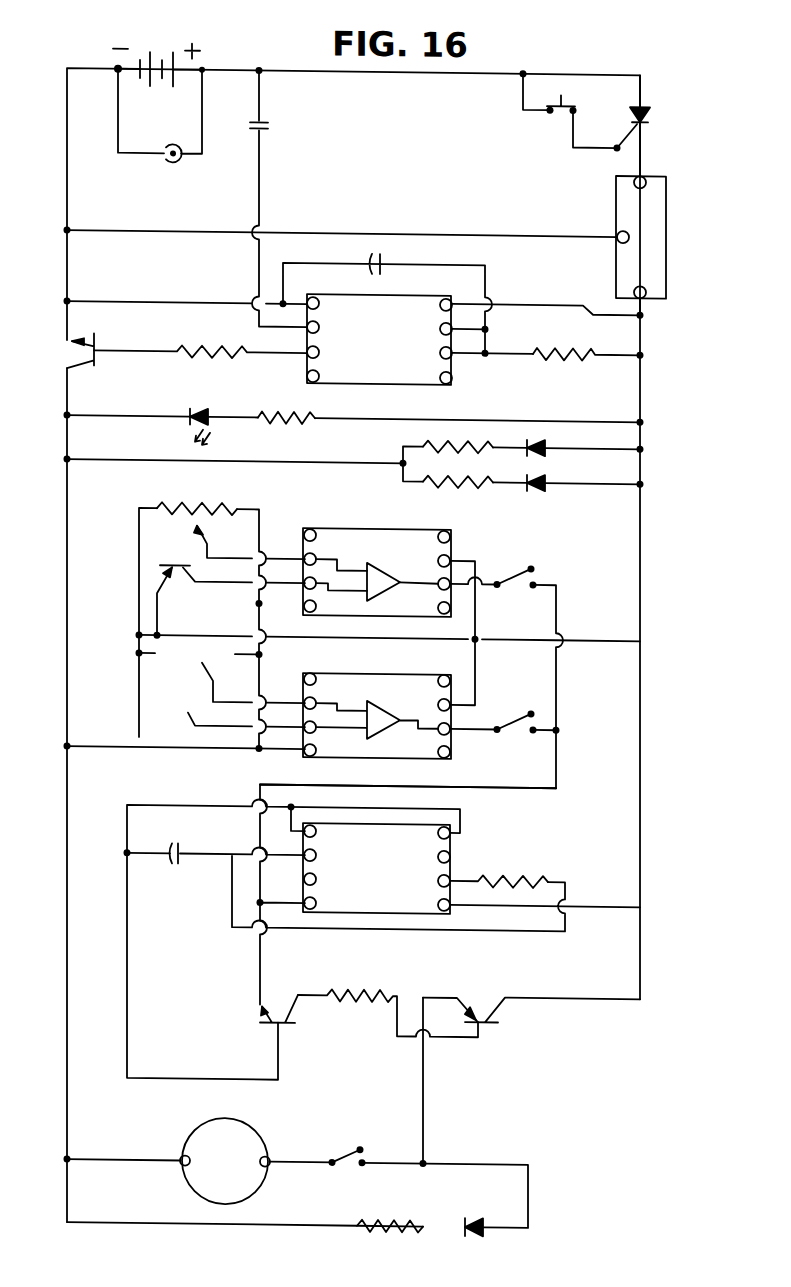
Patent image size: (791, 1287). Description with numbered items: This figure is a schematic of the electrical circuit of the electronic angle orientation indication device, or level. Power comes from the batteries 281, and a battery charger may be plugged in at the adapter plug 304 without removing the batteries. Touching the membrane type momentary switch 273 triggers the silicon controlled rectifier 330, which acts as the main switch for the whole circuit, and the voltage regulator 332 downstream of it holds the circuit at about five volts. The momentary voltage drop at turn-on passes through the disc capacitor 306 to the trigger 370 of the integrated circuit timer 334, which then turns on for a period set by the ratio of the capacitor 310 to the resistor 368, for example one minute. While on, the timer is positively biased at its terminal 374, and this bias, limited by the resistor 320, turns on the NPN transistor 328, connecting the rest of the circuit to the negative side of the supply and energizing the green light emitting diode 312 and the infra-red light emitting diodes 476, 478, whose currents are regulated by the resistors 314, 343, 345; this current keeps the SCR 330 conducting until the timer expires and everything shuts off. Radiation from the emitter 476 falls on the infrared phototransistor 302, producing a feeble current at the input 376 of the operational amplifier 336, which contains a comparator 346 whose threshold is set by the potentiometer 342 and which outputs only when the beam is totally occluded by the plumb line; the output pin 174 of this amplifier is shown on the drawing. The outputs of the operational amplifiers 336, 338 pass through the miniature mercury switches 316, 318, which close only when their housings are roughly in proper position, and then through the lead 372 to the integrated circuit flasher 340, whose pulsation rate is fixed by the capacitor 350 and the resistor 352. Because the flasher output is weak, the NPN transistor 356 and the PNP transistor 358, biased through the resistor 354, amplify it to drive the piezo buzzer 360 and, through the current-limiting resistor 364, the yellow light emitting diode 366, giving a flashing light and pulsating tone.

The batteries 281 is at (173, 44).
The adapter plug for recharger unit 304 is at (168, 167).
The disc capacitor 306 is at (271, 128).
The membrane type momentary switch 273 is at (562, 114).
The silicon controlled rectifier 330 is at (652, 117).
The integrated circuit voltage regulator 332 is at (623, 208).
The capacitor 310 is at (383, 258).
The integrated circuit timer 334 is at (390, 372).
The trigger 370 is at (306, 329).
The terminal 374 is at (306, 354).
The resistor 368 is at (547, 360).
The NPN transistor 328 is at (73, 353).
The resistor 320 is at (238, 347).
The light emitting diode 312 is at (202, 408).
The resistor 314 is at (312, 430).
The resistor 343 is at (430, 443).
The resistor 345 is at (460, 485).
The infra-red light emitting diode 476 is at (552, 438).
The infra-red light emitting diode 478 is at (546, 486).
The potentiometer 342 is at (183, 500).
The infrared phototransistor 302 is at (177, 575).
The integrated circuit operational amplifier 336 is at (388, 534).
The comparator 346 is at (374, 560).
The input 376 is at (315, 588).
The output pin 174 is at (442, 588).
The miniature mercury switch 316 is at (542, 565).
The integrated circuit operational amplifier 338 is at (385, 679).
The miniature mercury switch 318 is at (537, 719).
The lead 372 is at (459, 785).
The integrated circuit flasher 340 is at (423, 845).
The capacitor 350 is at (190, 877).
The resistor 352 is at (525, 877).
The resistor 354 is at (350, 985).
The NPN transistor 356 is at (273, 1020).
The PNP transistor 358 is at (483, 1027).
The piezo buzzer 360 is at (207, 1135).
The resistor 364 is at (397, 1213).
The light emitting diode 366 is at (477, 1193).